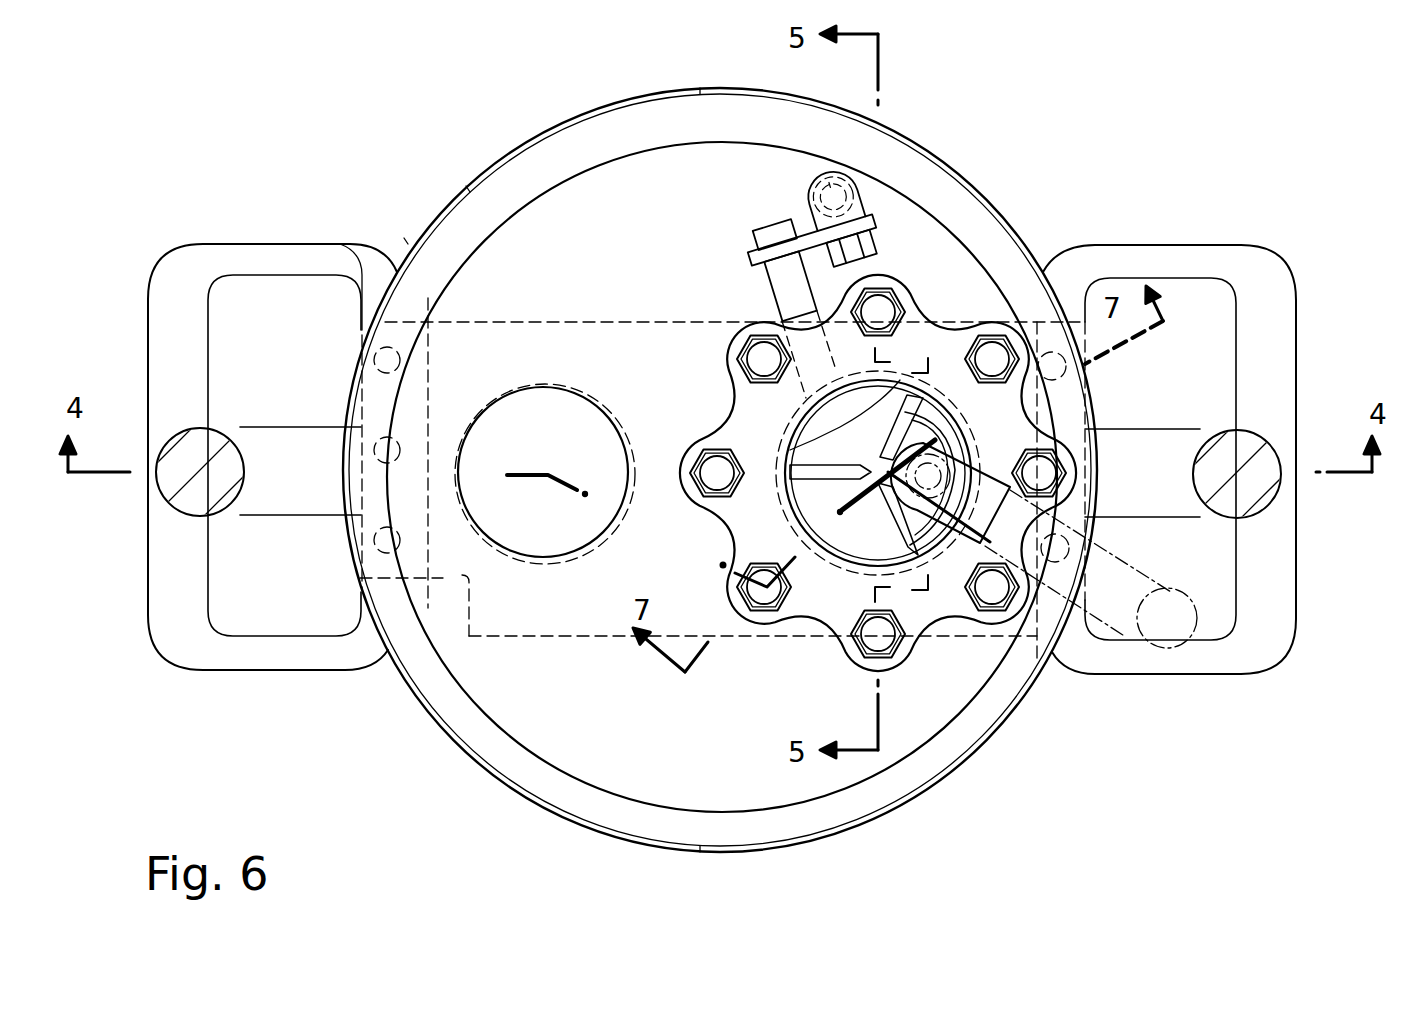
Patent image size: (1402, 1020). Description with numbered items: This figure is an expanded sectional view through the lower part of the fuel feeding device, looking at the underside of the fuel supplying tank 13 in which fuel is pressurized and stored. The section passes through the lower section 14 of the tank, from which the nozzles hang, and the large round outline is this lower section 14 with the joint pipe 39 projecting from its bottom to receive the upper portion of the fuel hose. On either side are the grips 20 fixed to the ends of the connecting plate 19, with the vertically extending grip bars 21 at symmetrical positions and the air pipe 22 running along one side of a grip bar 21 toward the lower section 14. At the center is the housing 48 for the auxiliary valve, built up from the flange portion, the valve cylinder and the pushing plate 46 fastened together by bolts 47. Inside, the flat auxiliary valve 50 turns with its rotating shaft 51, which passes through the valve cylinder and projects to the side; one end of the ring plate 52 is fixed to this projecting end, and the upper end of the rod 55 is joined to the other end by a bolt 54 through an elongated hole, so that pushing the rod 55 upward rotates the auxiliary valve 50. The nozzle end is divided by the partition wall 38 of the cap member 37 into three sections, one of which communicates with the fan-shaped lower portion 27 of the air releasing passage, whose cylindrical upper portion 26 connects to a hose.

The fuel supplying tank 13 is at (461, 192).
The lower section 14 is at (672, 270).
The connecting plate 19 is at (460, 320).
The grips 20 is at (162, 292).
The grip bars 21 is at (170, 492).
The air pipe 22 is at (1145, 605).
The cylindrical upper portion 26 is at (1031, 540).
The lower portion 27 is at (885, 512).
The cap member 37 is at (808, 502).
The partition wall 38 is at (820, 472).
The joint pipe 39 is at (512, 389).
The pushing plate 46 is at (812, 618).
The bolts 47 is at (862, 658).
The housing 48 is at (783, 633).
The auxiliary valve 50 is at (813, 418).
The rotating shaft 51 is at (757, 236).
The ring plate 52 is at (796, 230).
The bolt 54 is at (872, 238).
The rod 55 is at (848, 165).